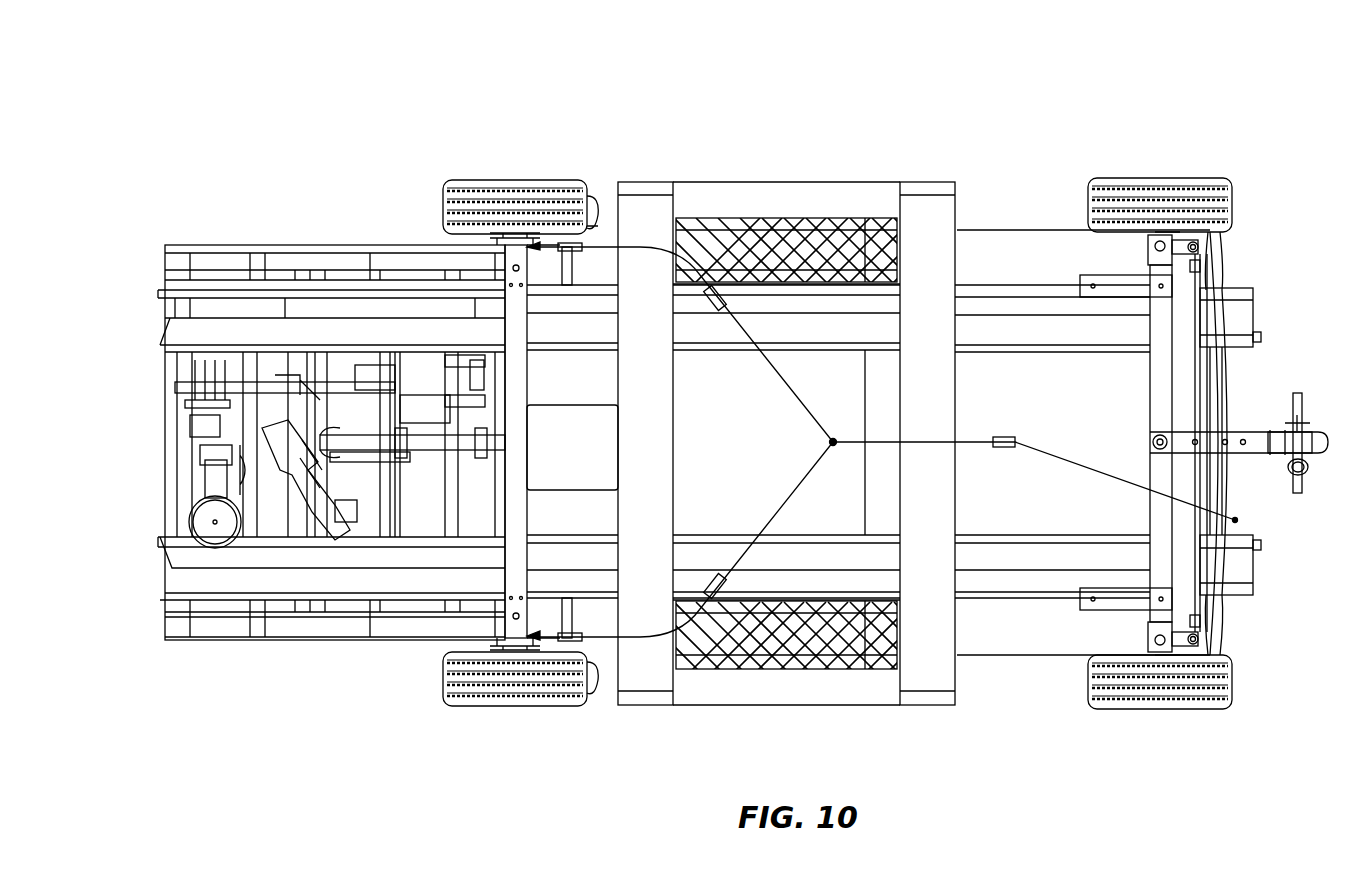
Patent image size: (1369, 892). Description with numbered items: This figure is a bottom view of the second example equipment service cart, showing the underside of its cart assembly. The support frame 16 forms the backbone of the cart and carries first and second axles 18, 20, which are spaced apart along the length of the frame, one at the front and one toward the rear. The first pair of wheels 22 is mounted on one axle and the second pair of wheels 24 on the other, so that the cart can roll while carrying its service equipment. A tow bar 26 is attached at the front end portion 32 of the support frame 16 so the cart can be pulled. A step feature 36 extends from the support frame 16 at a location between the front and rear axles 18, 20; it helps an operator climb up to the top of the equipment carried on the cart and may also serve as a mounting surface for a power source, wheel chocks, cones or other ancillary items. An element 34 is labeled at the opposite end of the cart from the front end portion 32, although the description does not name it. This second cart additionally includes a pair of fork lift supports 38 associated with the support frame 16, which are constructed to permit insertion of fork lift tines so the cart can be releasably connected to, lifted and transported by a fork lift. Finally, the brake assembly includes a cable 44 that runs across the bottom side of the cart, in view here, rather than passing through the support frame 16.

The support frame 16 is at (1240, 606).
The first axle 18 is at (1155, 520).
The second axle 20 is at (527, 517).
The first pair of wheels 22 is at (1170, 180).
The second pair of wheels 24 is at (443, 192).
The tow bar 26 is at (1302, 488).
The front end portion 32 is at (1240, 300).
The pump unit 34 is at (195, 337).
The step feature 36 is at (778, 195).
The fork lift supports 38 is at (635, 182).
The cable 44 is at (930, 442).